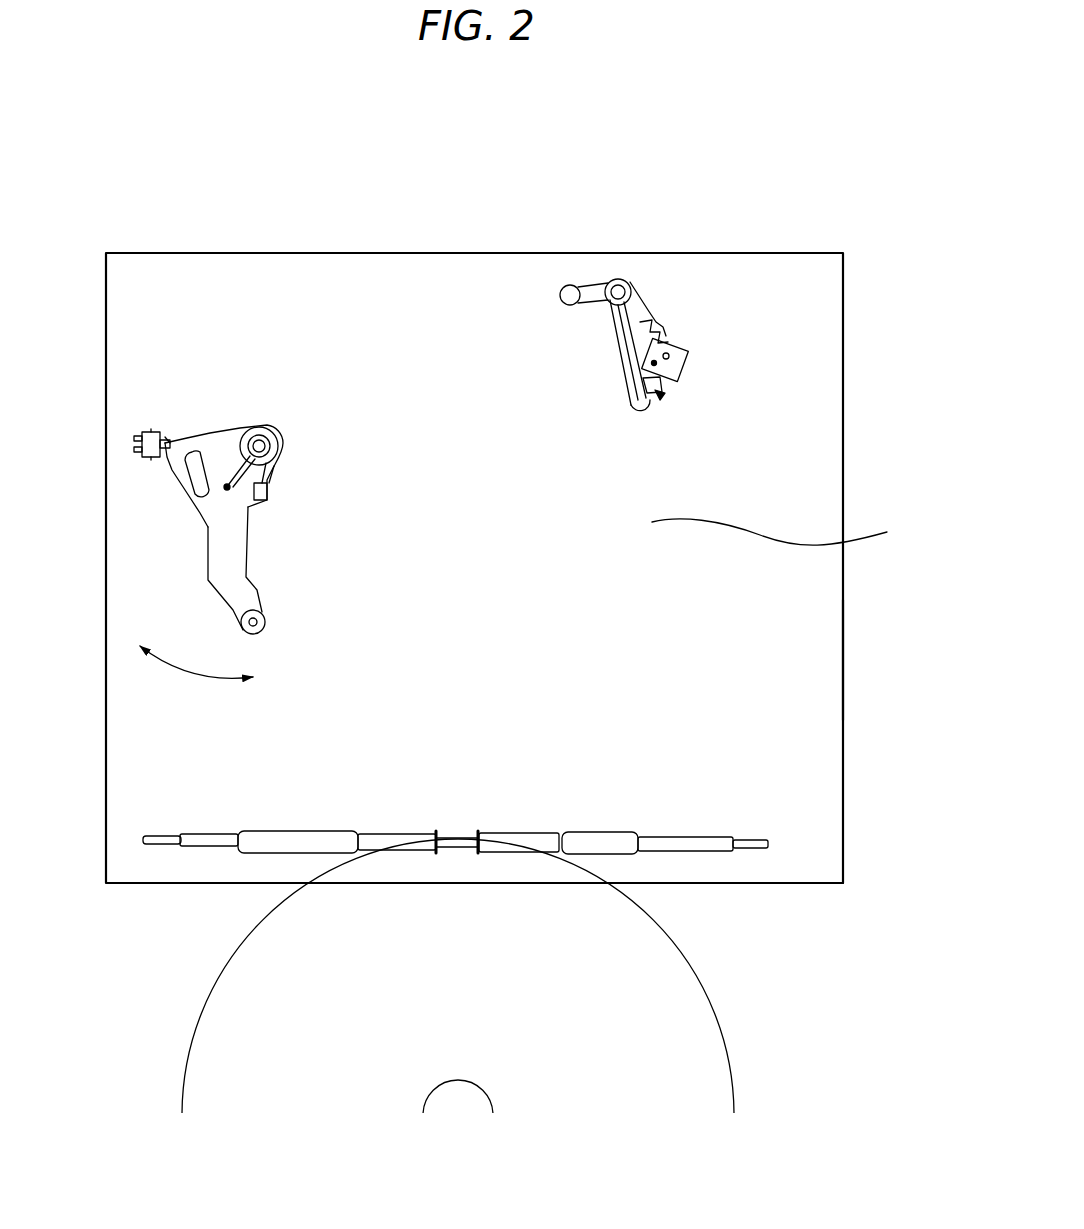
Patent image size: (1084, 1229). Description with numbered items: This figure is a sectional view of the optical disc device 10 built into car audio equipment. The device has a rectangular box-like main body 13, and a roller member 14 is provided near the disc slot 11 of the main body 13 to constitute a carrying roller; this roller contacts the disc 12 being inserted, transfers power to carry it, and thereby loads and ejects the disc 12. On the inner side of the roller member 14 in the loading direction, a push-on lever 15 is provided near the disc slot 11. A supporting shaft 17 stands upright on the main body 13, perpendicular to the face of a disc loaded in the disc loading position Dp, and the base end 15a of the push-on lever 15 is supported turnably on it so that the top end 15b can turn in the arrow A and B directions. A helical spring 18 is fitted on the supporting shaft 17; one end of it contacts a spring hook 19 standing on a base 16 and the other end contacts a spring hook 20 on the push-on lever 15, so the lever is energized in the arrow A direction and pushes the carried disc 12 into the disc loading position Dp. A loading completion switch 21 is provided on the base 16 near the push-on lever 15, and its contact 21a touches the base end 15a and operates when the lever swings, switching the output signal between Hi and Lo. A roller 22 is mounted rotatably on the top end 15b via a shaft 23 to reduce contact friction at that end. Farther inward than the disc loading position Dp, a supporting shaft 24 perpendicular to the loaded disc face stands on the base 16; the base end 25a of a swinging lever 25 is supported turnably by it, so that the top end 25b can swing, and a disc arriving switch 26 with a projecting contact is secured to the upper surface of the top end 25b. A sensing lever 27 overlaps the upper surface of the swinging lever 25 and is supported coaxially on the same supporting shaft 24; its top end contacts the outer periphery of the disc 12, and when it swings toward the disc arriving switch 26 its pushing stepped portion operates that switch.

The optical disc device 10 is at (233, 228).
The disc slot 11 is at (773, 886).
The disc 12 is at (735, 1058).
The main body 13 is at (847, 665).
The roller member 14 is at (686, 830).
The push-on lever 15 is at (197, 500).
The base end 15a is at (218, 440).
The top end 15b is at (217, 598).
The base 16 is at (800, 324).
The supporting shaft 17 is at (268, 426).
The helical spring 18 is at (272, 476).
The spring hook 19 is at (220, 485).
The spring hook 20 is at (268, 498).
The loading completion switch 21 is at (130, 427).
The contact 21a is at (167, 437).
The roller 22 is at (267, 615).
The shaft 23 is at (263, 624).
The supporting shaft 24 is at (618, 279).
The swinging lever 25 is at (669, 338).
The base end 25a is at (650, 304).
The top end 25b is at (688, 367).
The disc arriving switch 26 is at (662, 393).
The sensing lever 27 is at (610, 410).
The disc loading position Dp is at (789, 534).